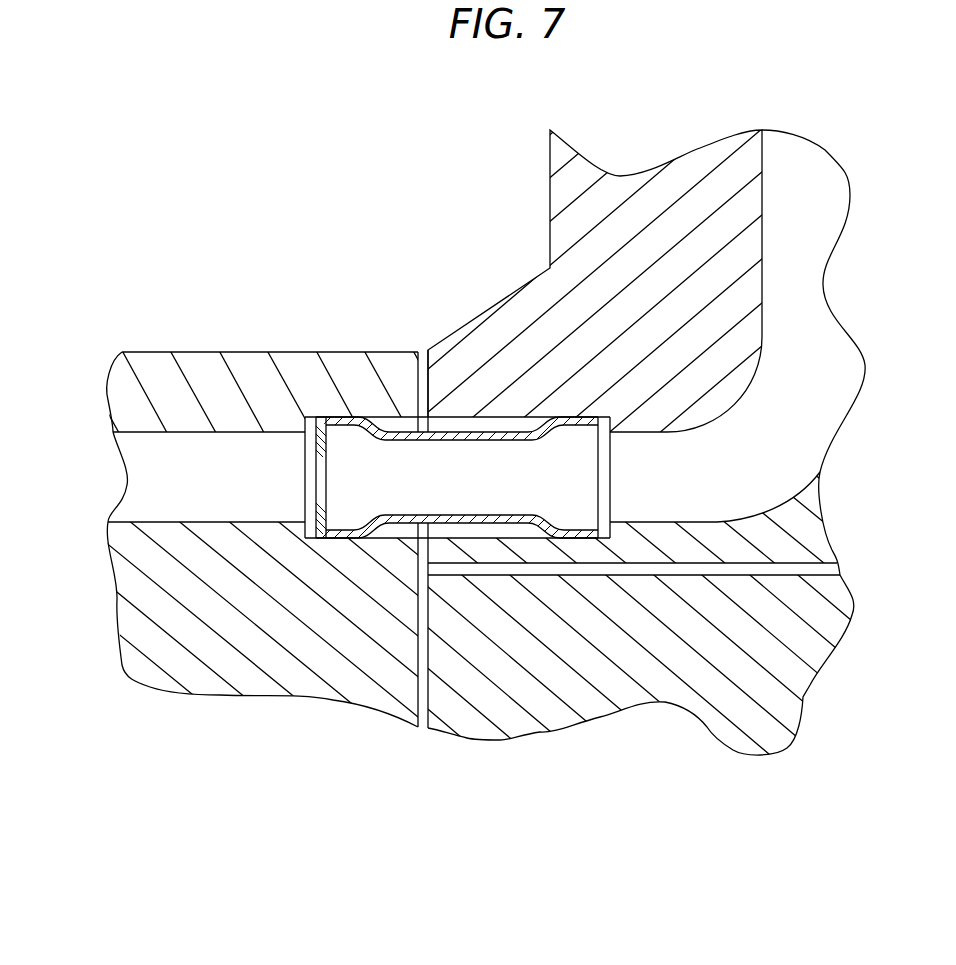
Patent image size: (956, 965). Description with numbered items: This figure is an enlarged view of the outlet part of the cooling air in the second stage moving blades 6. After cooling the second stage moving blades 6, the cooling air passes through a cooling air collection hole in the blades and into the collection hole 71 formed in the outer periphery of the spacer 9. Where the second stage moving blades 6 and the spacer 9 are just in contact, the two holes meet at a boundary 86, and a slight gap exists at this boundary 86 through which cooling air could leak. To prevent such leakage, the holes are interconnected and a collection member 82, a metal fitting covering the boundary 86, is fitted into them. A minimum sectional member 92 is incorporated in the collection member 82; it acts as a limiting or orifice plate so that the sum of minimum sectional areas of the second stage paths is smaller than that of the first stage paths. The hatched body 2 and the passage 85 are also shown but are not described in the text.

The housing body 2 is at (618, 680).
The second stage moving blades 6 is at (573, 228).
The spacer 9 is at (153, 600).
The collection hole 71 is at (180, 468).
The collection member 82 is at (492, 435).
The passage 85 is at (787, 567).
The boundary 86 is at (422, 655).
The minimum sectional member 92 is at (289, 415).